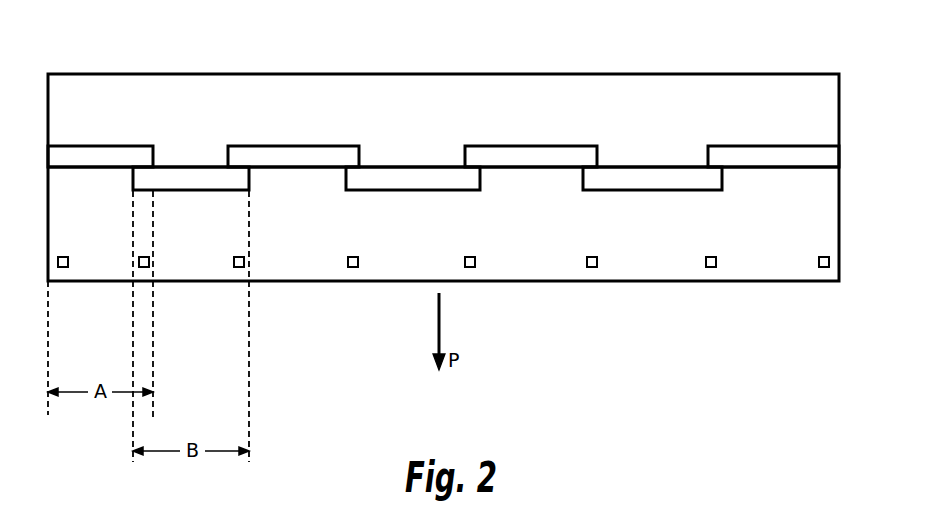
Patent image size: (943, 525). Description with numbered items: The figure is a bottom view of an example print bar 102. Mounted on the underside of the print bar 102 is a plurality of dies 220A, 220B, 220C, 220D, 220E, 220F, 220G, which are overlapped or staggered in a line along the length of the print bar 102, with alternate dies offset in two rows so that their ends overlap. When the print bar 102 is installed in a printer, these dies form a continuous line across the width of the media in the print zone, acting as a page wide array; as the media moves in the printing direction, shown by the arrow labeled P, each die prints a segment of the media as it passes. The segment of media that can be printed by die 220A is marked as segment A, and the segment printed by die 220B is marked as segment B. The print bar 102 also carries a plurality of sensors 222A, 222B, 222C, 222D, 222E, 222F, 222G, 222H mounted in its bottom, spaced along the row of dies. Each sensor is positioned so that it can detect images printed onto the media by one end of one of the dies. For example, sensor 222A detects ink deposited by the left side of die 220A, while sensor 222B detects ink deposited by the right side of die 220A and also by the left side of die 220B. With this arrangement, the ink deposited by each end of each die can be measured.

The print bar 102 is at (429, 74).
The die 220A is at (85, 146).
The die 220B is at (175, 191).
The die 220C is at (288, 146).
The die 220D is at (395, 191).
The die 220E is at (523, 146).
The die 220F is at (633, 191).
The die 220G is at (759, 146).
The sensor 222A is at (65, 267).
The sensor 222B is at (146, 267).
The sensor 222C is at (241, 267).
The sensor 222D is at (355, 267).
The sensor 222E is at (471, 267).
The sensor 222F is at (593, 267).
The sensor 222G is at (711, 267).
The sensor 222H is at (824, 267).